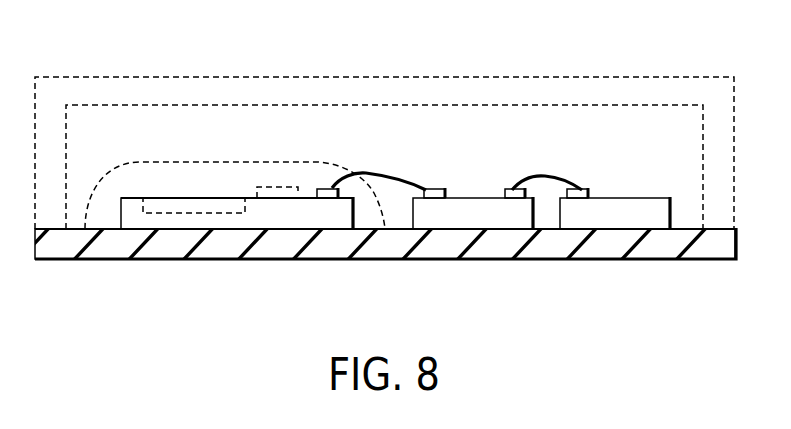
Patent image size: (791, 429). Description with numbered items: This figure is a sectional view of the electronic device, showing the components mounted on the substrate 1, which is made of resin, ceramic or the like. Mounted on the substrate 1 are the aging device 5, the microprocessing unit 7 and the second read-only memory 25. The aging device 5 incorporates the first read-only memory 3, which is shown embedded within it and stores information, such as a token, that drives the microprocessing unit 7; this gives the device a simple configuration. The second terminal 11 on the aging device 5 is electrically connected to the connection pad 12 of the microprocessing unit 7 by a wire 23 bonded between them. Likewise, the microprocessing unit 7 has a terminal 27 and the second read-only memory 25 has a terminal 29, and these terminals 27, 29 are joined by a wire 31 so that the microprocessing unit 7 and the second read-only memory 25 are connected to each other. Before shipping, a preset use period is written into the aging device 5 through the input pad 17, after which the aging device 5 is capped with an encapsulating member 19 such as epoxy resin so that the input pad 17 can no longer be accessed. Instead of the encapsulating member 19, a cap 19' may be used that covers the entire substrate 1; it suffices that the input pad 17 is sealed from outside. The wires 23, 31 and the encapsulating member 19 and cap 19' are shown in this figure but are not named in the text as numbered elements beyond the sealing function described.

The substrate 1 is at (710, 245).
The first read-only memory (ROM) 3 is at (167, 205).
The aging device (SSAD) 5 is at (270, 218).
The microprocessing unit (MPU) 7 is at (504, 218).
The second terminal 11 is at (329, 198).
The connection pad 12 is at (436, 198).
The input pad 17 is at (278, 185).
The encapsulating member 19 is at (235, 130).
The cap 19' is at (384, 117).
The bonding wire 23 is at (378, 172).
The second read-only memory (ROM) 25 is at (632, 218).
The terminal 27 is at (502, 189).
The terminal 29 is at (590, 189).
The bonding wire 31 is at (543, 176).